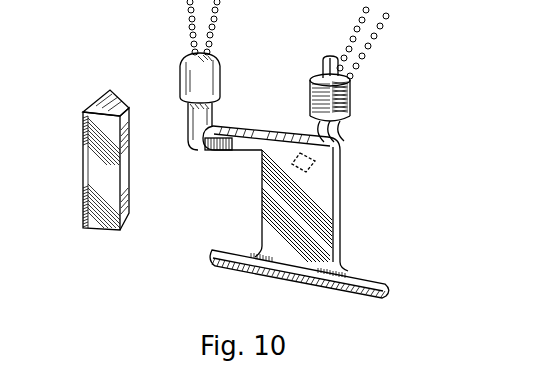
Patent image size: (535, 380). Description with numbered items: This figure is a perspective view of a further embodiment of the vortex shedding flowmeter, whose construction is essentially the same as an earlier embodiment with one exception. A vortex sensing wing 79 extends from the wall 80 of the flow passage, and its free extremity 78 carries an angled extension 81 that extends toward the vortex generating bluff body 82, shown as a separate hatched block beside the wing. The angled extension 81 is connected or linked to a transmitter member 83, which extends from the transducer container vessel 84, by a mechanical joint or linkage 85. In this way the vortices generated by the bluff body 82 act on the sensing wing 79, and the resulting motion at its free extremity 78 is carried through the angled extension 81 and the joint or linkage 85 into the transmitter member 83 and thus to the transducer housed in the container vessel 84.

The free extremity 78 is at (314, 164).
The vortex sensing wing 79 is at (300, 212).
The wall of the flow passage 80 is at (363, 276).
The angled extension 81 is at (261, 127).
The vortex generating bluff body 82 is at (102, 106).
The transmitter member 83 is at (187, 130).
The transducer container vessel 84 is at (200, 82).
The mechanical joint or linkage 85 is at (198, 150).